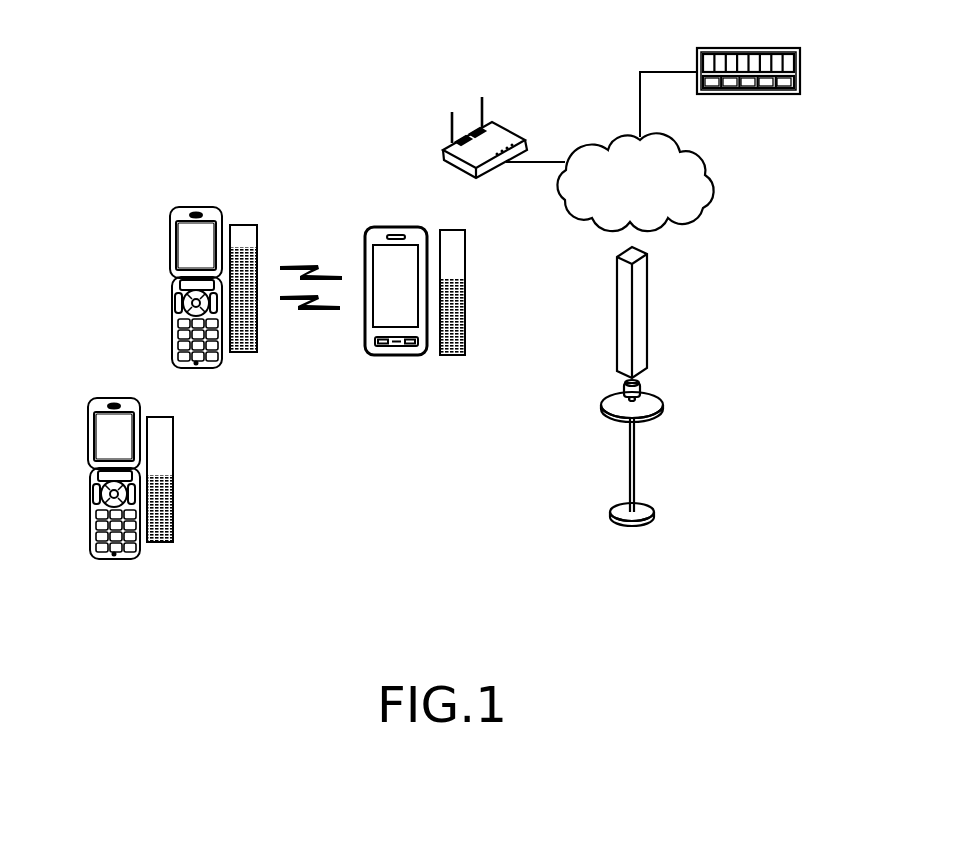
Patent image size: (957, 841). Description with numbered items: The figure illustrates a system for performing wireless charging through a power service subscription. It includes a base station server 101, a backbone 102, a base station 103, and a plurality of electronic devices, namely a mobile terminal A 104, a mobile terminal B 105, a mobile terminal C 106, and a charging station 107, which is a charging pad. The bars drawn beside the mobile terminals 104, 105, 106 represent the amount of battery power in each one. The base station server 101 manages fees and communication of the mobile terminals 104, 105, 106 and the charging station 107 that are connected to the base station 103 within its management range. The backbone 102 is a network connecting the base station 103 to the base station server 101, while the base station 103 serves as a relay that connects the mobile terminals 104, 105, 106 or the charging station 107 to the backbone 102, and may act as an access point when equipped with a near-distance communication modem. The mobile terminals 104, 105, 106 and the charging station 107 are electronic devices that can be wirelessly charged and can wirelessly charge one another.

The base station server 101 is at (747, 47).
The backbone 102 is at (716, 188).
The base station 103 is at (500, 125).
The mobile terminal A 104 is at (198, 206).
The mobile terminal B 105 is at (396, 227).
The mobile terminal C 106 is at (111, 396).
The charging station 107 is at (650, 313).